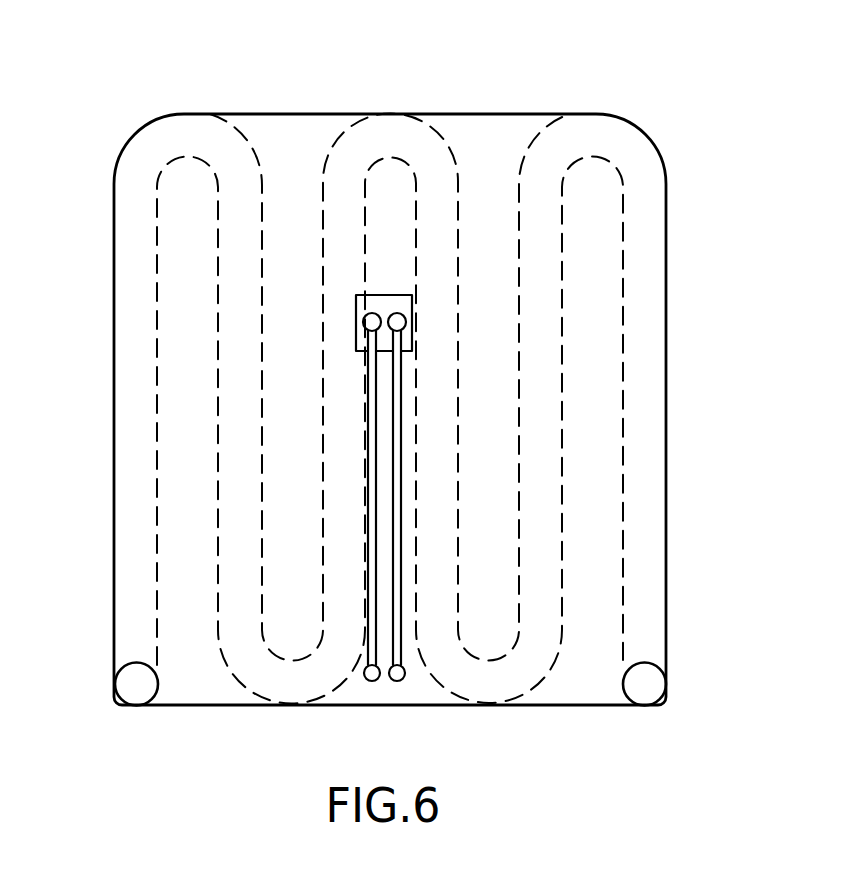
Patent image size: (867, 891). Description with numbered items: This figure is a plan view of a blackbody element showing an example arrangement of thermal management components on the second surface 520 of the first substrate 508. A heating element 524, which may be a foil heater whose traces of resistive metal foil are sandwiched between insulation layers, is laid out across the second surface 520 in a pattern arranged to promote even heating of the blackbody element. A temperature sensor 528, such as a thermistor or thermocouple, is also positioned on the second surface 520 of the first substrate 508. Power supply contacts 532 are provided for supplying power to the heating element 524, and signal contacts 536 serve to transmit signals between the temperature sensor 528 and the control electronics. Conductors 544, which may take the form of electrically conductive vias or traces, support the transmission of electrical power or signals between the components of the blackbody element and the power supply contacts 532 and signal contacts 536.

The first substrate 508 is at (503, 132).
The second surface 520 is at (282, 147).
The heating element 524 is at (597, 134).
The temperature sensor 528 is at (384, 300).
The power supply contacts 532 is at (132, 693).
The signal contacts 536 is at (374, 679).
The conductors 544 is at (373, 604).